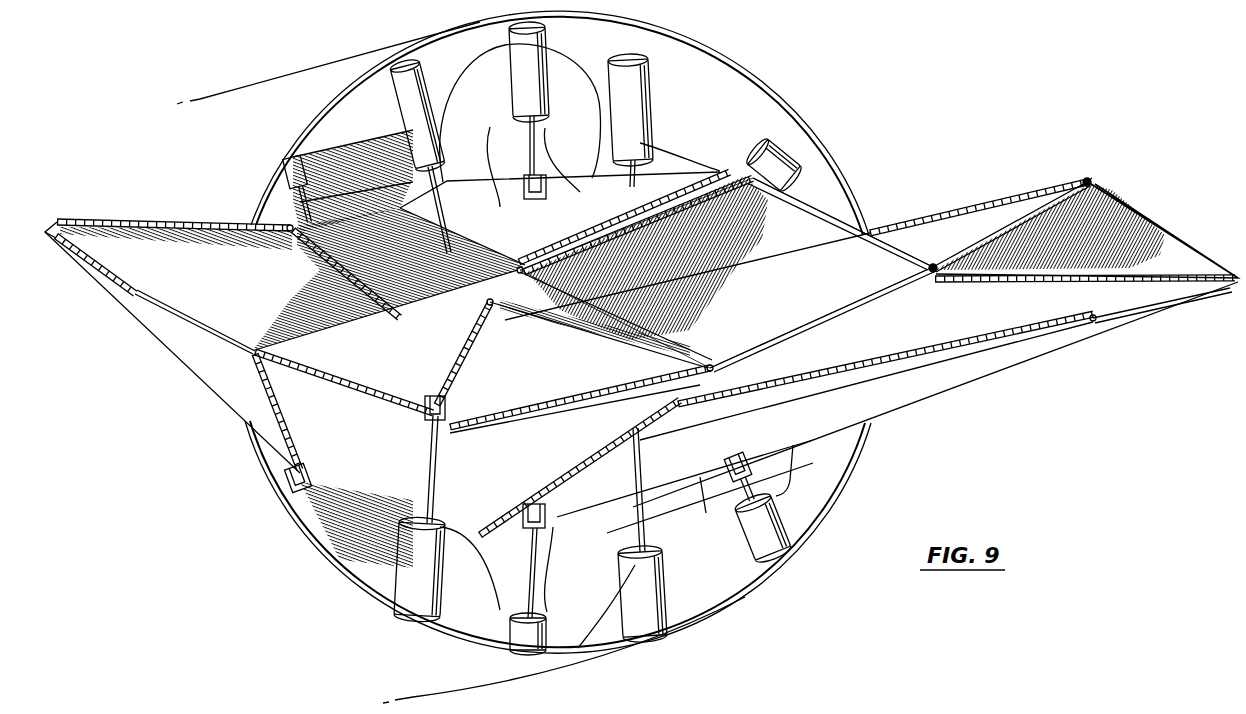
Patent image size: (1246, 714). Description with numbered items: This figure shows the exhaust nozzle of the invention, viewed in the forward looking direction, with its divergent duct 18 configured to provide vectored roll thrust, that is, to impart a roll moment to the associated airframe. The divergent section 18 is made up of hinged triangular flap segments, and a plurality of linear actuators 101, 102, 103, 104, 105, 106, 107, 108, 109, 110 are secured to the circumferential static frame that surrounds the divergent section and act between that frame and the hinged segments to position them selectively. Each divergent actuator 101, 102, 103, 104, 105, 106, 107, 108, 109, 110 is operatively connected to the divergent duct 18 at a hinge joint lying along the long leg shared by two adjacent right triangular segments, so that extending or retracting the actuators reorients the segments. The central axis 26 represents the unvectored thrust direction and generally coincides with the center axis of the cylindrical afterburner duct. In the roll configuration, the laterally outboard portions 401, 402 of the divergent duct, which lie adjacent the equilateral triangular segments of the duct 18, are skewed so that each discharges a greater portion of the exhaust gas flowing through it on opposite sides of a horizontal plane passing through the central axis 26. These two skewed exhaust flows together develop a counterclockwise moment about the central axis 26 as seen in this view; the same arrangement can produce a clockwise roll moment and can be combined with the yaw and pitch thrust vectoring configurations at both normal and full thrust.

The divergent section 18 is at (1097, 168).
The central axis 26 is at (772, 252).
The linear actuator 101 is at (757, 152).
The linear actuator 102 is at (612, 118).
The linear actuator 103 is at (510, 73).
The linear actuator 104 is at (400, 103).
The linear actuator 105 is at (283, 169).
The linear actuator 106 is at (289, 493).
The linear actuator 107 is at (412, 603).
The linear actuator 108 is at (546, 618).
The linear actuator 109 is at (653, 552).
The linear actuator 110 is at (773, 511).
The laterally outboard portion 401 is at (128, 288).
The laterally outboard portion 402 is at (1164, 220).